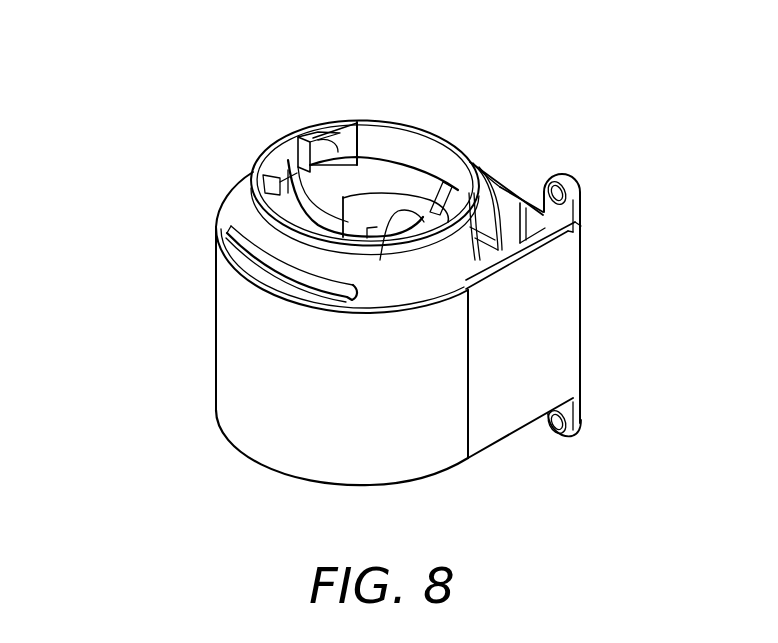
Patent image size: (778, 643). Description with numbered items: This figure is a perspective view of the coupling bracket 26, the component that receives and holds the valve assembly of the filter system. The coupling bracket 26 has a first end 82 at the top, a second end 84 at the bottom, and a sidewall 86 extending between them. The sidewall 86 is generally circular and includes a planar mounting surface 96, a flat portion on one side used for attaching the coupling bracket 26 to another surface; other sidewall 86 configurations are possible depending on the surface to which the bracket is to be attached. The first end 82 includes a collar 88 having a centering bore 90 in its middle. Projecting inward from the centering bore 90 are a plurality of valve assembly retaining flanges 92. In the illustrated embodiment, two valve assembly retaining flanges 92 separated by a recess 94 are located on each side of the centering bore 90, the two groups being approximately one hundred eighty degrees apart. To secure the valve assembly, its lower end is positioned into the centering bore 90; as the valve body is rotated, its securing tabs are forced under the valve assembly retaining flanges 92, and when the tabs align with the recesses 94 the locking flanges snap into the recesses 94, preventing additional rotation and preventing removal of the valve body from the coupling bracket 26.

The coupling bracket 26 is at (165, 141).
The first end 82 is at (391, 201).
The second end 84 is at (389, 487).
The sidewall 86 is at (304, 355).
The collar 88 is at (482, 167).
The centering bore 90 is at (421, 147).
The valve assembly retaining flanges 92 is at (332, 153).
The recess 94 is at (338, 130).
The planar mounting surface 96 is at (583, 332).